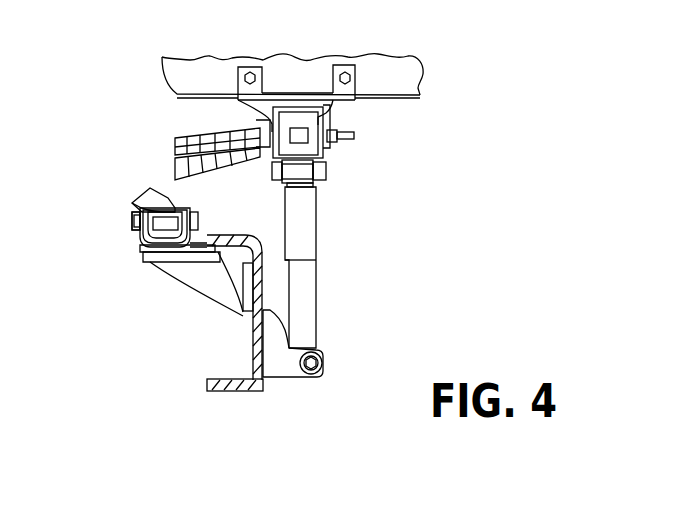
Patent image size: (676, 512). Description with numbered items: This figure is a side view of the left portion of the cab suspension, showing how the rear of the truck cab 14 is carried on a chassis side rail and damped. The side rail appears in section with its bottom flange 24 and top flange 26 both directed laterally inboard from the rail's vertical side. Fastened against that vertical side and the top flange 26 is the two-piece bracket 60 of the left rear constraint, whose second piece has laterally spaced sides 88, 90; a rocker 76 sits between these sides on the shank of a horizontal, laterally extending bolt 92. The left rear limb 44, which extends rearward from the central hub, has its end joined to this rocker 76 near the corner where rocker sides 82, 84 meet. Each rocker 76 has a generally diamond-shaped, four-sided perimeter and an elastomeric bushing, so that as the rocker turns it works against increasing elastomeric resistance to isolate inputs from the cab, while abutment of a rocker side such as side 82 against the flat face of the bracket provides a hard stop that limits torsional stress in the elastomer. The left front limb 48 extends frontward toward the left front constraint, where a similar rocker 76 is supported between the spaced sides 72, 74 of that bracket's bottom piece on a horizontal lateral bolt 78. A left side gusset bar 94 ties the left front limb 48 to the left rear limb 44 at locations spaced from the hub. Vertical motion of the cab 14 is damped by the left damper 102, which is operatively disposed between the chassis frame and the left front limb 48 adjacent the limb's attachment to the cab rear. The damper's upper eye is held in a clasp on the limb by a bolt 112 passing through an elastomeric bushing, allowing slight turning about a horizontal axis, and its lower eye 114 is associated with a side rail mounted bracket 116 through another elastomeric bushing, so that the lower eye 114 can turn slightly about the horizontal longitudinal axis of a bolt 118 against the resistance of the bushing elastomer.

The truck cab 14 is at (405, 82).
The bottom flange 24 is at (236, 384).
The top flange 26 is at (230, 237).
The left rear limb 44 is at (132, 203).
The left front limb 48 is at (175, 138).
The two-piece bracket 60 is at (207, 290).
The side 72 is at (244, 116).
The side 74 is at (330, 117).
The rocker 76 is at (281, 110).
The bolt 78 is at (355, 137).
The side 82 is at (302, 118).
The side 84 is at (328, 153).
The side 88 is at (138, 227).
The side 90 is at (205, 245).
The bolt 92 is at (132, 220).
The left side gusset bar 94 is at (170, 170).
The left damper 102 is at (316, 244).
The bolt 112 is at (327, 158).
The lower eye 114 is at (320, 348).
The side rail mounted bracket 116 is at (278, 378).
The bolt 118 is at (323, 364).